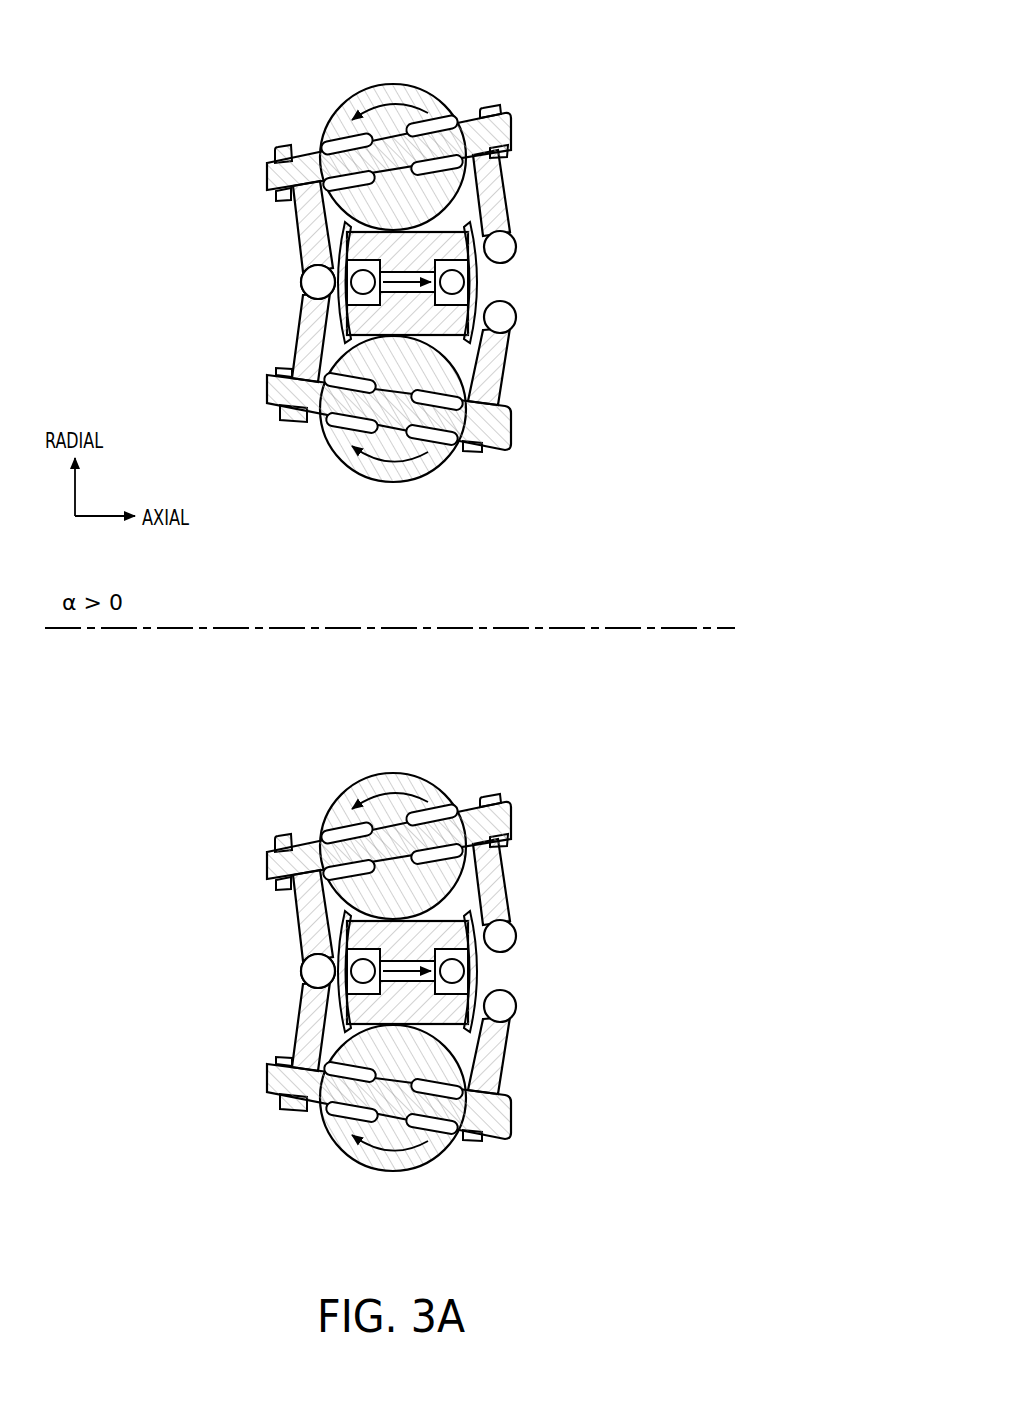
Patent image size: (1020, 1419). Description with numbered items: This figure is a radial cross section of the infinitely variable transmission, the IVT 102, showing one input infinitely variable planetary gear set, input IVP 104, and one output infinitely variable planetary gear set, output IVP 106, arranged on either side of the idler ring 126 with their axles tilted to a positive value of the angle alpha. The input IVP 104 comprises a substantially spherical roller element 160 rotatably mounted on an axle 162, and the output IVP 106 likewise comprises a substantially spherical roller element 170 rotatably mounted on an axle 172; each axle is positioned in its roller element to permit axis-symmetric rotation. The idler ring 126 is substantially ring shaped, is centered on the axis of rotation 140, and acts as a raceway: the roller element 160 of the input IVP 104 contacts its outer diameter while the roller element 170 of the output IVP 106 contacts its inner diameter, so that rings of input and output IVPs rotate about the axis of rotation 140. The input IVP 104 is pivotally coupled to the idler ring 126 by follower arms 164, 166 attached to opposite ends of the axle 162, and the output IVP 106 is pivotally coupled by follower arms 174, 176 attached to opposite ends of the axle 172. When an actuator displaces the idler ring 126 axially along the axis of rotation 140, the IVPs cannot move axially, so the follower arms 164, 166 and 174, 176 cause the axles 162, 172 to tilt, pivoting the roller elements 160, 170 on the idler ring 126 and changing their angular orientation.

The infinitely variable transmission 102 is at (662, 142).
The input infinitely variable planetary gear set 104 is at (502, 78).
The output infinitely variable planetary gear set 106 is at (490, 487).
The idler ring 126 is at (336, 300).
The axis of rotation 140 is at (675, 628).
The roller element 160 is at (392, 85).
The axle 162 is at (267, 176).
The follower arm 164 is at (508, 198).
The follower arm 166 is at (295, 248).
The roller element 170 is at (388, 482).
The axle 172 is at (267, 392).
The follower arm 174 is at (508, 378).
The follower arm 176 is at (295, 340).